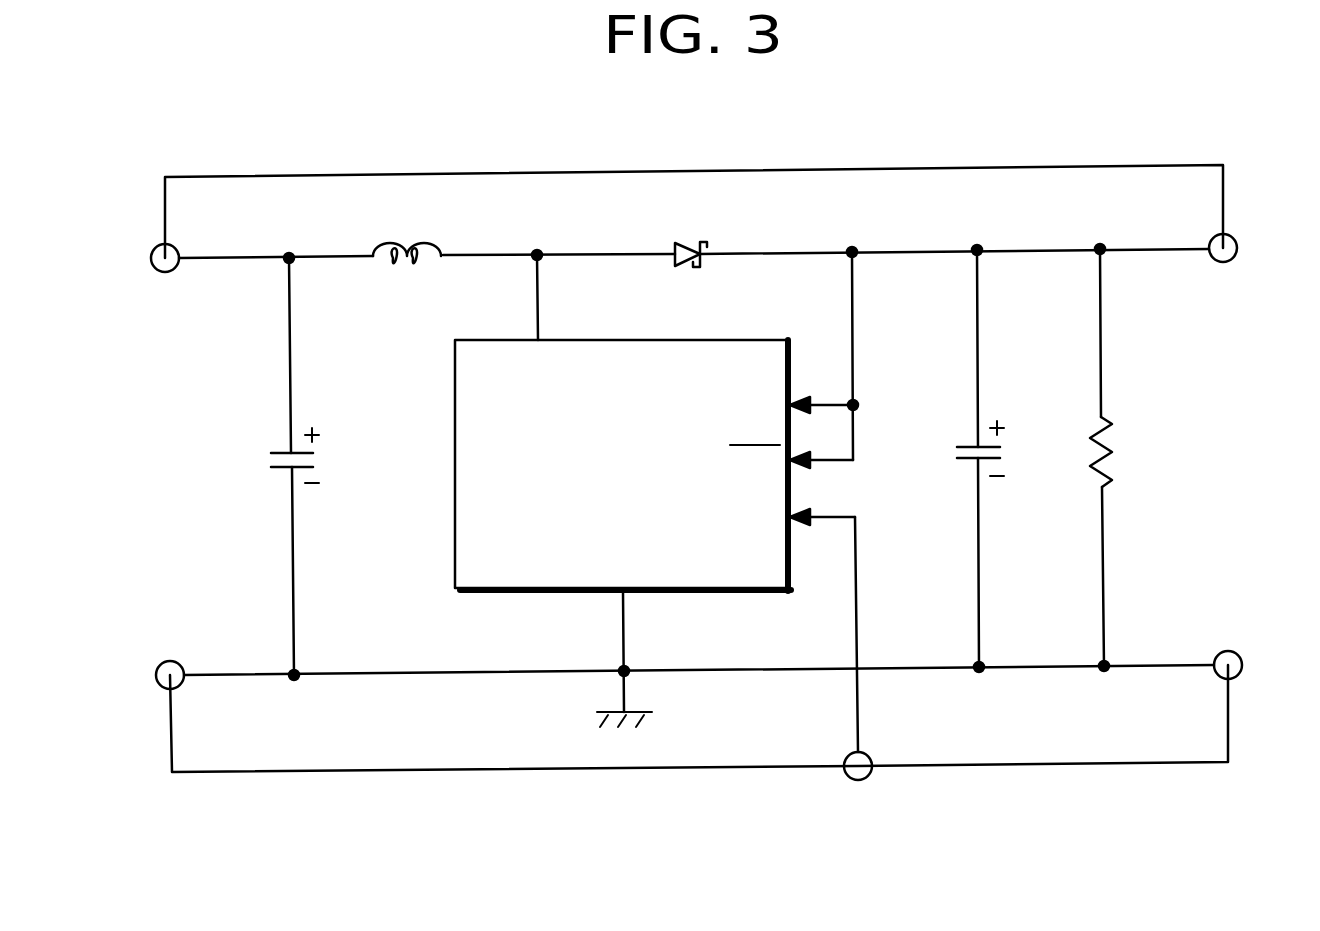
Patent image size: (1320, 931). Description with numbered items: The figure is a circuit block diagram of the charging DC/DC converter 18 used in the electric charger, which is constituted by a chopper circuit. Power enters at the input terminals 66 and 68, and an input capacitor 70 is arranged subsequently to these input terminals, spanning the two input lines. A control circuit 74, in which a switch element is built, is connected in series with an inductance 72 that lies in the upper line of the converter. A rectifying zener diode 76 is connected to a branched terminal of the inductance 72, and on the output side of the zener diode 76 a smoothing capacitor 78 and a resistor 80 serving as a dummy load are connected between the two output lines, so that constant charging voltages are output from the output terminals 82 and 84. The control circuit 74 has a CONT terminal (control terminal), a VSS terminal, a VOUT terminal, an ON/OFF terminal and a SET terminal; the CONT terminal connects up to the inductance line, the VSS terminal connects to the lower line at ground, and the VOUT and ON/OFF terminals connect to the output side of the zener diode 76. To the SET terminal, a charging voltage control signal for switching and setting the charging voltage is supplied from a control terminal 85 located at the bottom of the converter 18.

The charging DC/DC converter 18 is at (596, 142).
The input terminal 66 is at (151, 258).
The input terminal 68 is at (156, 675).
The input capacitor 70 is at (272, 463).
The inductance 72 is at (403, 247).
The control circuit 74 is at (597, 339).
The rectifying zener diode 76 is at (687, 244).
The smoothing capacitor 78 is at (957, 457).
The resistor 80 is at (1118, 458).
The output terminal 82 is at (1237, 248).
The output terminal 84 is at (1242, 665).
The control terminal 85 is at (858, 780).